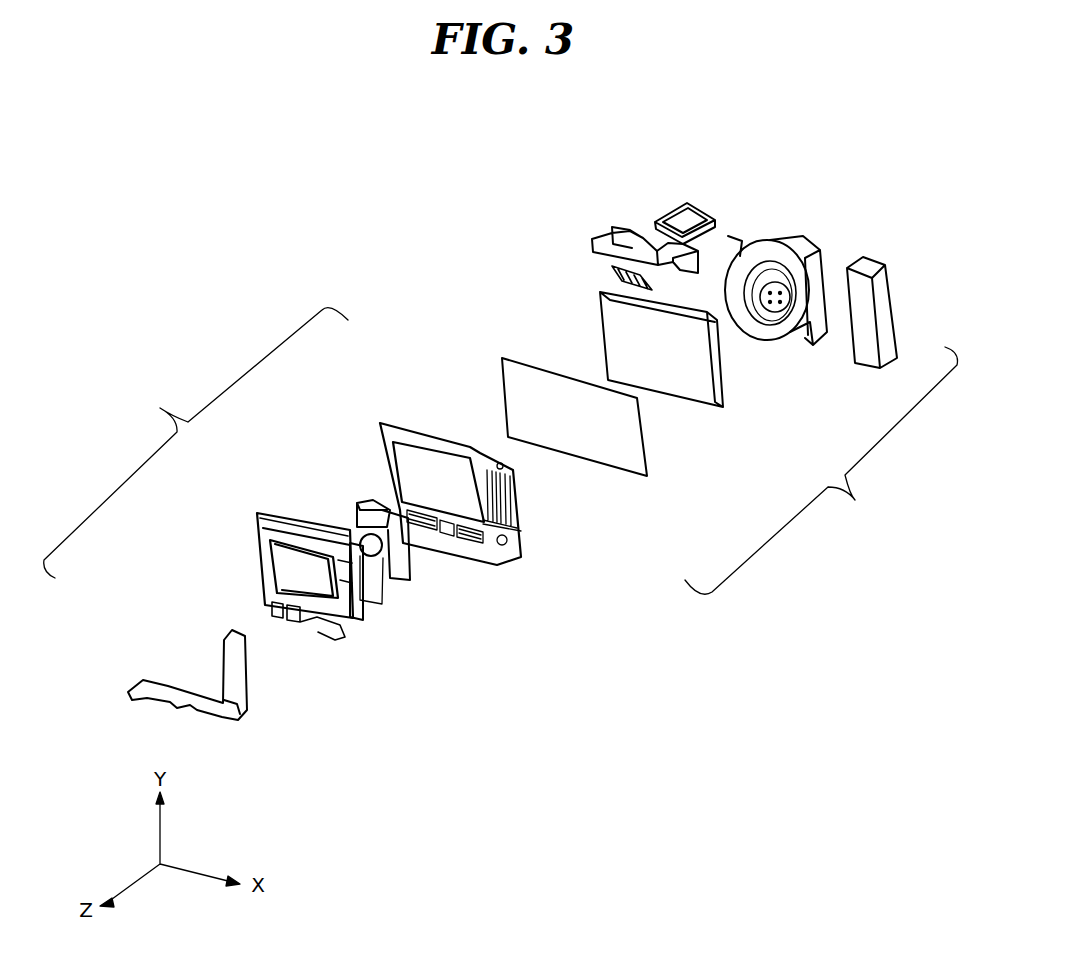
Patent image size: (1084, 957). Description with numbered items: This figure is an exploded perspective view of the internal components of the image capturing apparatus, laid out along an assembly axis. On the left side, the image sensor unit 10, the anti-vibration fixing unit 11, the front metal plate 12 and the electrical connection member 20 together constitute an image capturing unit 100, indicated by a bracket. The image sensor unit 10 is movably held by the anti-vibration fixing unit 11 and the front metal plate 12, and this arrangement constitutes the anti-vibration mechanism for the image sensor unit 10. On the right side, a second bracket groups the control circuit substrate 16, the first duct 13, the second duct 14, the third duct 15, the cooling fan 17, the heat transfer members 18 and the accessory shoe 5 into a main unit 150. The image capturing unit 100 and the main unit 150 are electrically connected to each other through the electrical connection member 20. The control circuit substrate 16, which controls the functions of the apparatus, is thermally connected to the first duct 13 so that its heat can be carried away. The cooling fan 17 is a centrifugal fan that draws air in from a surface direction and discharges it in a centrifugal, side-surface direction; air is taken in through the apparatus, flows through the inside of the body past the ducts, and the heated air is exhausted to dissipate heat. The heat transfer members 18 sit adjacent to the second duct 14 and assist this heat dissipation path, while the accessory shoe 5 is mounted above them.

The image capturing unit 100 is at (196, 443).
The main unit 150 is at (821, 470).
The accessory shoe 5 is at (667, 212).
The image sensor unit 10 is at (260, 514).
The anti-vibration fixing unit 11 is at (417, 427).
The front metal plate 12 is at (167, 682).
The first duct 13 is at (693, 387).
The second duct 14 is at (613, 243).
The third duct 15 is at (873, 265).
The control circuit substrate 16 is at (630, 462).
The cooling fan 17 is at (782, 240).
The heat transfer members 18 is at (595, 252).
The electrical connection member 20 is at (374, 500).